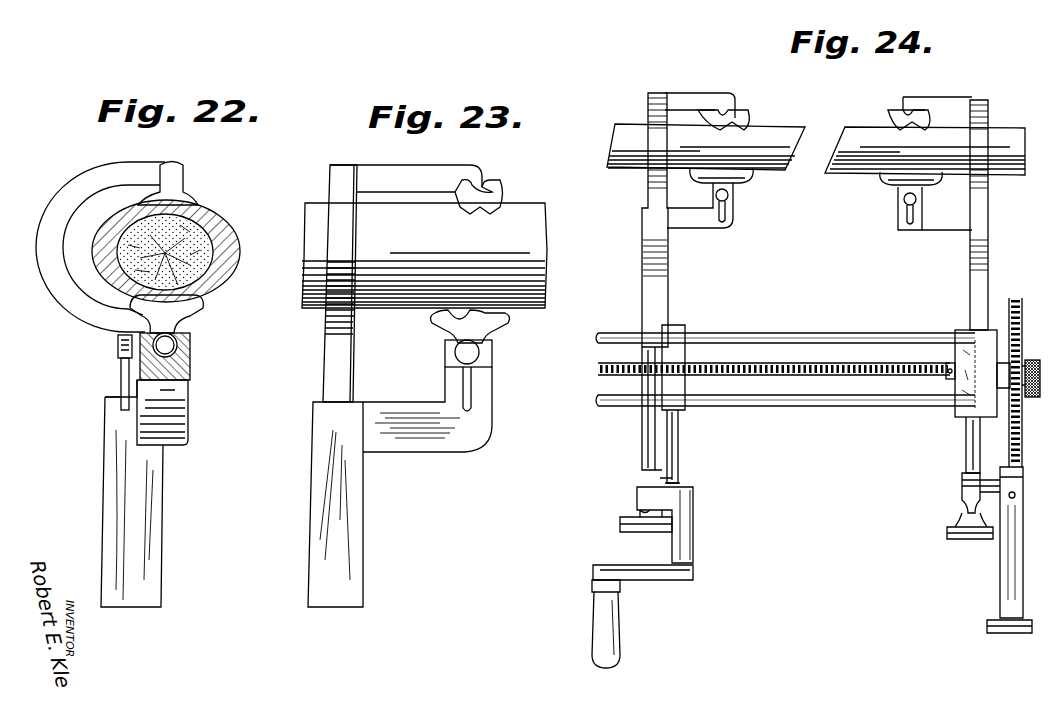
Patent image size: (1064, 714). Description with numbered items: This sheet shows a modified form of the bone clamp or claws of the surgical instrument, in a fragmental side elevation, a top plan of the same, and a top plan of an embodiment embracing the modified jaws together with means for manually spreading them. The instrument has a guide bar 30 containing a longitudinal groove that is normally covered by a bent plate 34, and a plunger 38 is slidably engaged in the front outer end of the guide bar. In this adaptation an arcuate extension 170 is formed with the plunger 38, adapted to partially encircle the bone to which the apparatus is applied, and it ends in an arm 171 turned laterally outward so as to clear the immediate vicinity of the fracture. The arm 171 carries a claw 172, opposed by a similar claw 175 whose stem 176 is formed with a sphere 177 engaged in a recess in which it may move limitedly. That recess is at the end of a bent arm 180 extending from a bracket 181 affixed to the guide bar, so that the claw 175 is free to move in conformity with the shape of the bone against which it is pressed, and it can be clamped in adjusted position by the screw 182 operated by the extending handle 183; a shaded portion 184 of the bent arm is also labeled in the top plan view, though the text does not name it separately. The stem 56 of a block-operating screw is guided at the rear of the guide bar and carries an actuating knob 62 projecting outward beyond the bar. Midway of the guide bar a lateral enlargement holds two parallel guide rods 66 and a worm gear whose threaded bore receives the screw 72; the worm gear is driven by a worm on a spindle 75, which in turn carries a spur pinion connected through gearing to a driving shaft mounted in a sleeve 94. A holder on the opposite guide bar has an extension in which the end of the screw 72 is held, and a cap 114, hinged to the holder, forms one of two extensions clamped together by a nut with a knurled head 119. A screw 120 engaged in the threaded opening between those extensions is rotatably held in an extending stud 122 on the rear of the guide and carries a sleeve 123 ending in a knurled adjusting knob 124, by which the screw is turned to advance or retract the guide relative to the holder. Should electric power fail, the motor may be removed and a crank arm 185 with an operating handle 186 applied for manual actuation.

In FIG. 22, the guide bar 30 is at (325, 572).
In FIG. 23, the guide bar 30 is at (325, 572).
In FIG. 24, the guide bar 30 is at (655, 306).
In FIG. 22, the bent plate 34 is at (111, 540).
In FIG. 24, the bent plate 34 is at (968, 302).
In FIG. 23, the plunger 38 is at (337, 382).
In FIG. 24, the stem 56 is at (650, 460).
In FIG. 24, the actuating knob 62 is at (632, 530).
In FIG. 24, the guide rod 66 is at (872, 340).
In FIG. 24, the screw 72 is at (812, 378).
In FIG. 24, the spindle 75 is at (680, 452).
In FIG. 24, the sleeve 94 is at (695, 528).
In FIG. 24, the cap 114 is at (975, 398).
In FIG. 24, the knurled head 119 is at (1034, 360).
In FIG. 24, the screw 120 is at (1009, 300).
In FIG. 24, the extending stud 122 is at (995, 487).
In FIG. 24, the sleeve 123 is at (1005, 580).
In FIG. 24, the knurled adjusting knob 124 is at (990, 630).
In FIG. 22, the arcuate extension 170 is at (76, 310).
In FIG. 22, the arm 171 is at (165, 162).
In FIG. 23, the arm 171 is at (392, 175).
In FIG. 24, the arm 171 is at (706, 100).
In FIG. 23, the claw 172 is at (495, 199).
In FIG. 24, the claw 172 is at (880, 117).
In FIG. 22, the claw 175 is at (345, 262).
In FIG. 23, the claw 175 is at (445, 333).
In FIG. 24, the claw 175 is at (760, 180).
In FIG. 22, the stem 176 is at (172, 328).
In FIG. 22, the sphere 177 is at (178, 356).
In FIG. 22, the bent arm 180 is at (172, 398).
In FIG. 23, the bent arm 180 is at (480, 380).
In FIG. 24, the bracket 181 is at (700, 230).
In FIG. 22, the screw 182 is at (118, 346).
In FIG. 23, the screw 182 is at (472, 352).
In FIG. 24, the screw 182 is at (730, 197).
In FIG. 22, the extending handle 183 is at (121, 380).
In FIG. 23, the extending handle 183 is at (472, 410).
In FIG. 24, the extending handle 183 is at (900, 213).
In FIG. 23, the shaded arm 184 is at (400, 437).
In FIG. 24, the crank arm 185 is at (612, 568).
In FIG. 24, the operating handle 186 is at (600, 652).